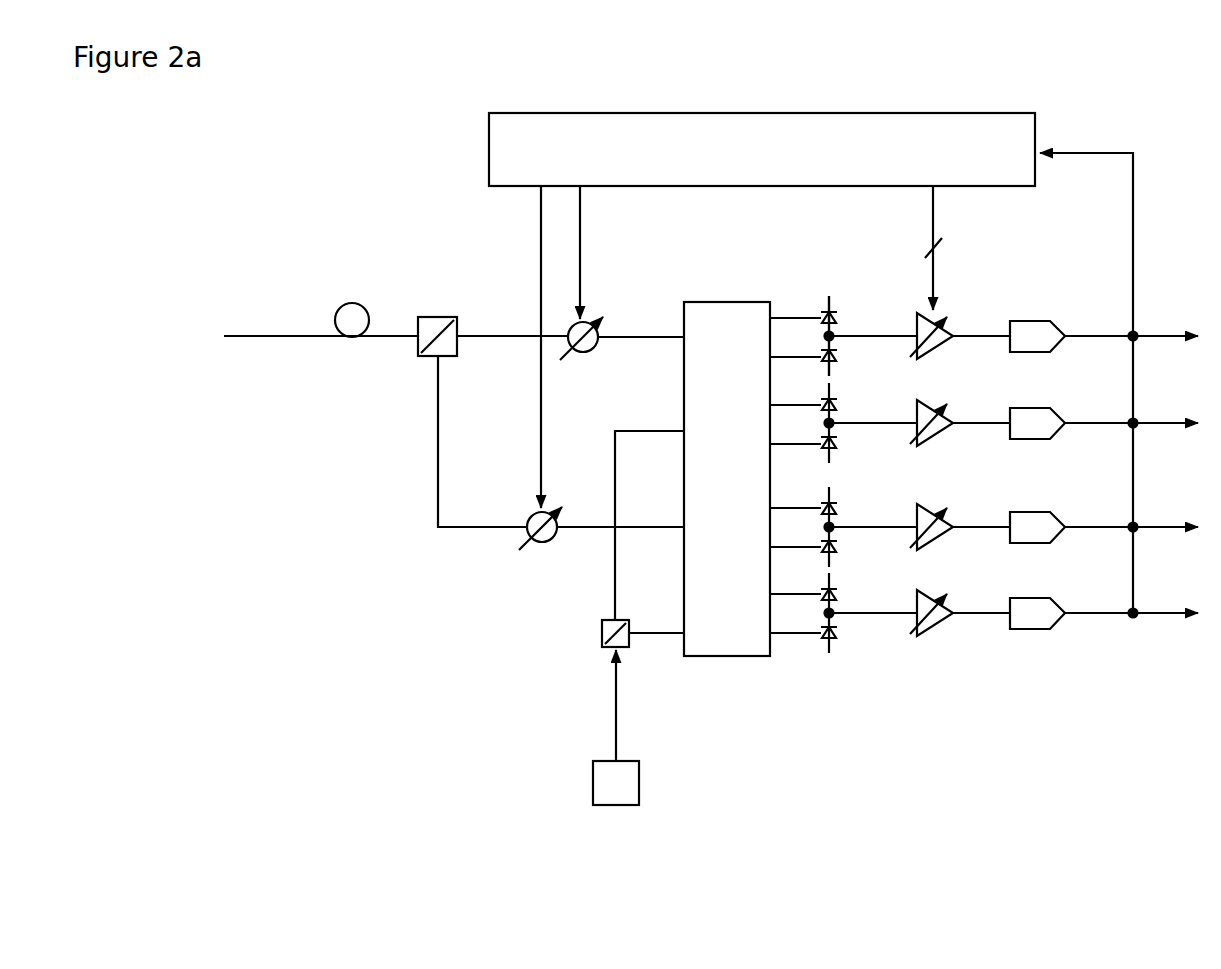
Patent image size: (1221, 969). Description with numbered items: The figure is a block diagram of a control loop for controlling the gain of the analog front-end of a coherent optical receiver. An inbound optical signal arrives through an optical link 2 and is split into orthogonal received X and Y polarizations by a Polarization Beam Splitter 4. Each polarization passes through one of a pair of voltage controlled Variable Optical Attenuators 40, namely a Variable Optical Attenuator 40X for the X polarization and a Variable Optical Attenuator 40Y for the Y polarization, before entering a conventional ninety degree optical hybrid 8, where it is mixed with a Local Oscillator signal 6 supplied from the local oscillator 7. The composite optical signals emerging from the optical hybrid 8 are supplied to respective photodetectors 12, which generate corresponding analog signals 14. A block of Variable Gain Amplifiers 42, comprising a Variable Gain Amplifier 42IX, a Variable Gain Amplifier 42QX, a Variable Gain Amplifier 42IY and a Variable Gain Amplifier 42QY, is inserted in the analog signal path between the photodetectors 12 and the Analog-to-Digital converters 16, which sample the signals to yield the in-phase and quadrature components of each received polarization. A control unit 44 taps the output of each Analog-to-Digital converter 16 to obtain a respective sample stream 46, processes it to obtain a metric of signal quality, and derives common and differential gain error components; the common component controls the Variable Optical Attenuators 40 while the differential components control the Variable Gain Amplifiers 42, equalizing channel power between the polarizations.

The optical link 2 is at (292, 338).
The Polarization Beam Splitter 4 is at (438, 316).
The Local Oscillator signal 6 is at (614, 703).
The local oscillator (LO) 7 is at (630, 760).
The 90° optical hybrid 8 is at (720, 399).
The photodetectors 12 is at (829, 284).
The analog signals 14 is at (856, 302).
The Analog-to-Digital converters 16 is at (1028, 320).
The Variable Optical Attenuators 40 is at (561, 449).
The Variable Optical Attenuator for X polarization 40X is at (590, 351).
The Variable Optical Attenuator for Y polarization 40Y is at (549, 541).
The Variable Gain Amplifiers 42 is at (960, 491).
The Variable Gain Amplifier for IX signal 42IX is at (935, 352).
The Variable Gain Amplifier for QX signal 42QX is at (935, 439).
The Variable Gain Amplifier for IY signal 42IY is at (935, 543).
The Variable Gain Amplifier for QY signal 42QY is at (935, 629).
The control unit 44 is at (1020, 113).
The sample stream 46 is at (1136, 236).